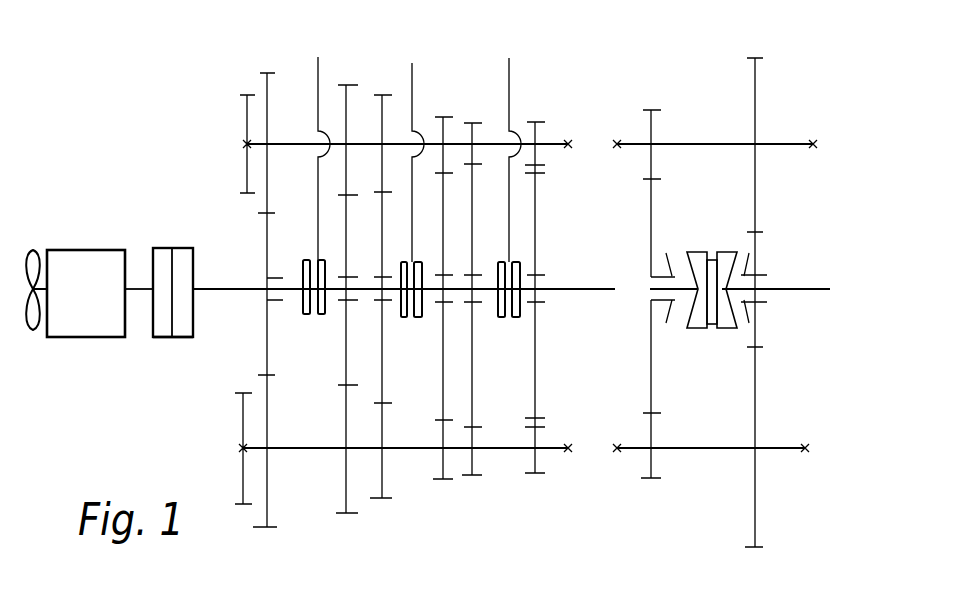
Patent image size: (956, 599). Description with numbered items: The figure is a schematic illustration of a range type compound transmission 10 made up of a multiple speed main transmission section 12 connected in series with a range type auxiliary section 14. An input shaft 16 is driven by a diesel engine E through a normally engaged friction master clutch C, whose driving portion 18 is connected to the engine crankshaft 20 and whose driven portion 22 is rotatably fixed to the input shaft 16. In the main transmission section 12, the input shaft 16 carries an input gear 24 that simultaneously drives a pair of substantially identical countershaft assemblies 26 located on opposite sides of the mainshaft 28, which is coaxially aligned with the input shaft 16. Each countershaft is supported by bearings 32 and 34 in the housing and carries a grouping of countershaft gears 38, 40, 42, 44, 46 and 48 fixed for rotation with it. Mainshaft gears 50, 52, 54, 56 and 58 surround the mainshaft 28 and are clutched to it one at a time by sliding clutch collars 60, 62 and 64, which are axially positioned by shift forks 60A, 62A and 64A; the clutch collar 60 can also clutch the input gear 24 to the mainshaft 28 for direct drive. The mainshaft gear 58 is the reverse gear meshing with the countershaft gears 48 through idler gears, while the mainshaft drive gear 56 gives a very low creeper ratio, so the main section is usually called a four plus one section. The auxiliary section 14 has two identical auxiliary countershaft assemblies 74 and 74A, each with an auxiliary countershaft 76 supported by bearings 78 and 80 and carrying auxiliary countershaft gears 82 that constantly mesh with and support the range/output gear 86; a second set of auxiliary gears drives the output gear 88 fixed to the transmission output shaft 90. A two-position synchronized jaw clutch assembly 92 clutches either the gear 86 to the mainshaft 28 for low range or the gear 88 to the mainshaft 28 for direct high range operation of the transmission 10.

The diesel engine E is at (75, 293).
The friction master clutch C is at (185, 249).
The compound transmission 10 is at (609, 106).
The main transmission section 12 is at (397, 68).
The auxiliary section 14 is at (709, 98).
The input shaft 16 is at (223, 288).
The input or driving portion 18 is at (158, 337).
The engine crankshaft 20 is at (135, 287).
The driven portion 22 is at (180, 338).
The input gear 24 is at (267, 255).
The countershaft assembly 26 is at (284, 140).
The mainshaft 28 is at (605, 290).
The bearing 32 is at (241, 449).
The bearing 34 is at (569, 450).
The countershaft gear 38 is at (267, 508).
The countershaft gear 40 is at (346, 495).
The countershaft gear 42 is at (382, 485).
The countershaft gear 44 is at (443, 465).
The countershaft gear 46 is at (470, 468).
The countershaft gear 48 is at (535, 462).
The mainshaft gear 50 is at (345, 362).
The mainshaft gear 52 is at (382, 377).
The mainshaft gear 54 is at (442, 387).
The mainshaft drive gear 56 is at (472, 378).
The mainshaft gear 58 is at (535, 388).
The sliding clutch collar 60 is at (304, 315).
The shift fork 60A is at (317, 217).
The sliding clutch collar 62 is at (413, 262).
The shift fork 62A is at (412, 108).
The sliding clutch collar 64 is at (499, 265).
The shift fork 64A is at (509, 112).
The auxiliary countershaft assembly 74 is at (692, 140).
The auxiliary countershaft assembly 74A is at (717, 449).
The auxiliary countershaft 76 is at (738, 146).
The bearing 78 is at (616, 148).
The bearing 80 is at (814, 140).
The auxiliary section countershaft gear 82 is at (652, 128).
The range/output gear 86 is at (648, 230).
The output gear 88 is at (754, 243).
The transmission output shaft 90 is at (789, 286).
The two-position synchronized jaw clutch assembly 92 is at (697, 333).